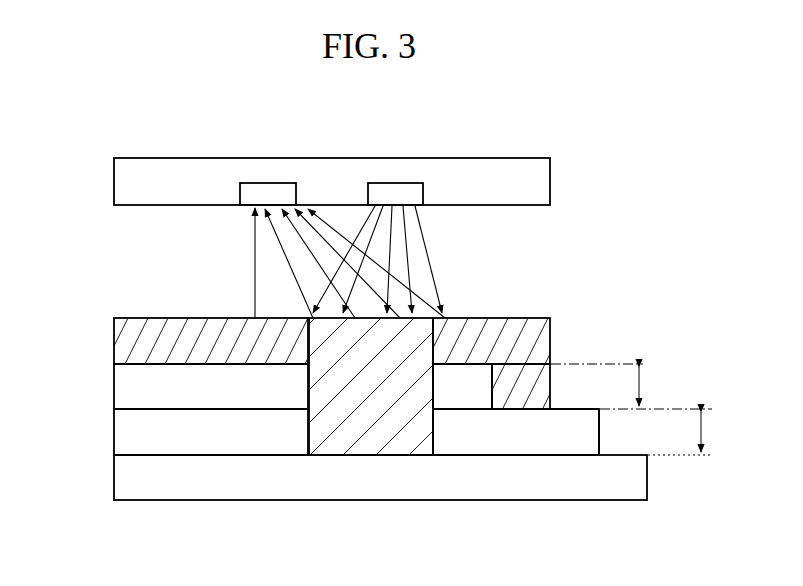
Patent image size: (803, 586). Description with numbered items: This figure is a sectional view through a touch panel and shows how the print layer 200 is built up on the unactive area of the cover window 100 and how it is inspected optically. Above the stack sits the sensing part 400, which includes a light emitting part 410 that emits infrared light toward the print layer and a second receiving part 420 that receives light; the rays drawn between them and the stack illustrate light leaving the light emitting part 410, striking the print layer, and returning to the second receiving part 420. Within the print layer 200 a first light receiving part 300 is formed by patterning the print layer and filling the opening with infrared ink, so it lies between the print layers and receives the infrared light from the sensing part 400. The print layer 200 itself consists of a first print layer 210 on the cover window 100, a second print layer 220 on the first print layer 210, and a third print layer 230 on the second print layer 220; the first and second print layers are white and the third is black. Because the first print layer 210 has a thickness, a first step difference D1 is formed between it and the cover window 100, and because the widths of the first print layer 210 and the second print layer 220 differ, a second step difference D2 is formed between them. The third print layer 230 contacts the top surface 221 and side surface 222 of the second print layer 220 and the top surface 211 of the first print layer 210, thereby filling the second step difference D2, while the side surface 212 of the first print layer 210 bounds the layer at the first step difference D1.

The cover window 100 is at (118, 478).
The print layer 200 is at (55, 332).
The first print layer 210 is at (114, 433).
The top surface of the first print layer 211 is at (575, 409).
The side surface of the first print layer 212 is at (600, 431).
The second print layer 220 is at (114, 389).
The top surface of the second print layer 221 is at (463, 364).
The side surface of the second print layer 222 is at (493, 387).
The third print layer 230 is at (114, 340).
The first light receiving part 300 is at (371, 445).
The sensing part 400 is at (551, 181).
The light emitting part 410 is at (397, 185).
The second receiving part 420 is at (270, 185).
The first step difference D1 is at (664, 432).
The second step difference D2 is at (609, 385).